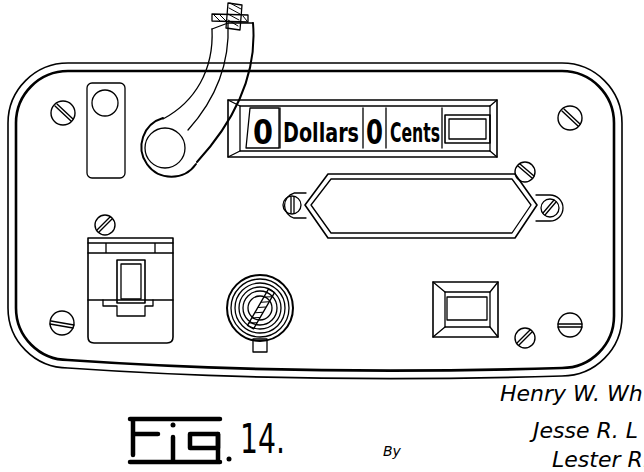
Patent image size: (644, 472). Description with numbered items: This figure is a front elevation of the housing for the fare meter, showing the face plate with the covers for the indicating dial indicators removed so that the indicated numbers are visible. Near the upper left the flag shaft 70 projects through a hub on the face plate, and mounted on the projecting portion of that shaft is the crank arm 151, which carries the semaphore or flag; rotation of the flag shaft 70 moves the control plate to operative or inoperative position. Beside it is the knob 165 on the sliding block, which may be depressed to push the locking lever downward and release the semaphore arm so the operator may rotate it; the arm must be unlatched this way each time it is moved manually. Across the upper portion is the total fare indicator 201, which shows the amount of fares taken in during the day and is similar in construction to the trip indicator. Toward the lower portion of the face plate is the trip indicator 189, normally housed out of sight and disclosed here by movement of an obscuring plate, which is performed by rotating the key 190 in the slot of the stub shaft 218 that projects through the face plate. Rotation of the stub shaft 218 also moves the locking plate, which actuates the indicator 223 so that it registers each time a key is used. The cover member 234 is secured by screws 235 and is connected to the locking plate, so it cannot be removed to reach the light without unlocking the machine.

The knob 165 is at (100, 115).
The crank arm 151 is at (243, 85).
The flag shaft 70 is at (170, 157).
The total fare indicator 201 is at (487, 109).
The screws 235 is at (556, 200).
The cover member 234 is at (408, 218).
The indicator 223 is at (140, 279).
The stub shaft 218 is at (273, 300).
The key 190 is at (266, 312).
The trip indicator 189 is at (495, 303).